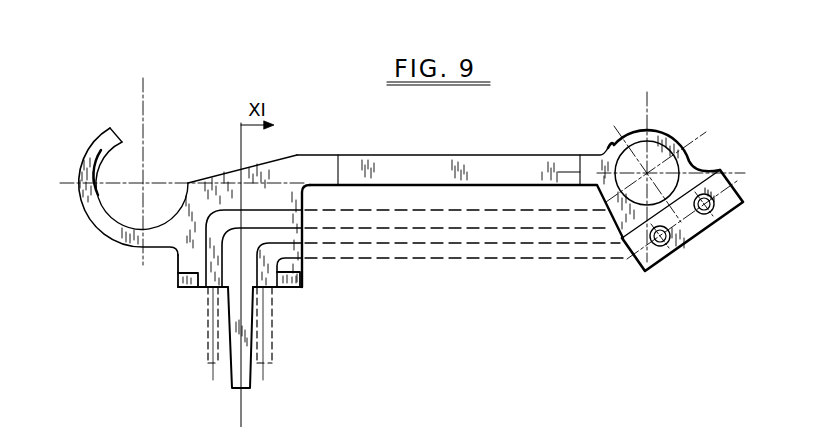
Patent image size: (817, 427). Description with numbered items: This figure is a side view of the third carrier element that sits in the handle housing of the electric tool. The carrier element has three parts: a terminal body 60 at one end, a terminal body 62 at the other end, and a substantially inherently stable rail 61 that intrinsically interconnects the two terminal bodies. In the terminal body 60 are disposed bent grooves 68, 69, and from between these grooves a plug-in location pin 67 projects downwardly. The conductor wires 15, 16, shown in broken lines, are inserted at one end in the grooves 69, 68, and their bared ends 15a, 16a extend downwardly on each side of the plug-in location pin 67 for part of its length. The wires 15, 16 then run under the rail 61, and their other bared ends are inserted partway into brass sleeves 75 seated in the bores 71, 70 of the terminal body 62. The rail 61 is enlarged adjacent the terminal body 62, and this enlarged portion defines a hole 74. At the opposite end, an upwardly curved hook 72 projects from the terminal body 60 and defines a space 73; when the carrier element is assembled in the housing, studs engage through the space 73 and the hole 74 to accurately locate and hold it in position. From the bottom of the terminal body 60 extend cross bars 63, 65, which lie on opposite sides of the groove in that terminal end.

The conductor wire 15 is at (542, 226).
The conductor wire 16 is at (445, 258).
The bared end of conductor wire 15a is at (207, 345).
The bared end of conductor wire 16a is at (276, 362).
The terminal body 60 is at (185, 250).
The rail 61 is at (489, 170).
The terminal body 62 is at (725, 173).
The cross bar 63 is at (303, 283).
The cross bar 65 is at (180, 286).
The plug-in location pin 67 is at (248, 348).
The bent groove 68 is at (278, 286).
The bent groove 69 is at (212, 283).
The bore 70 is at (658, 246).
The bore 71 is at (702, 214).
The hook 72 is at (93, 150).
The space 73 is at (158, 203).
The hole 74 is at (637, 153).
The brass sleeve 75 is at (715, 205).